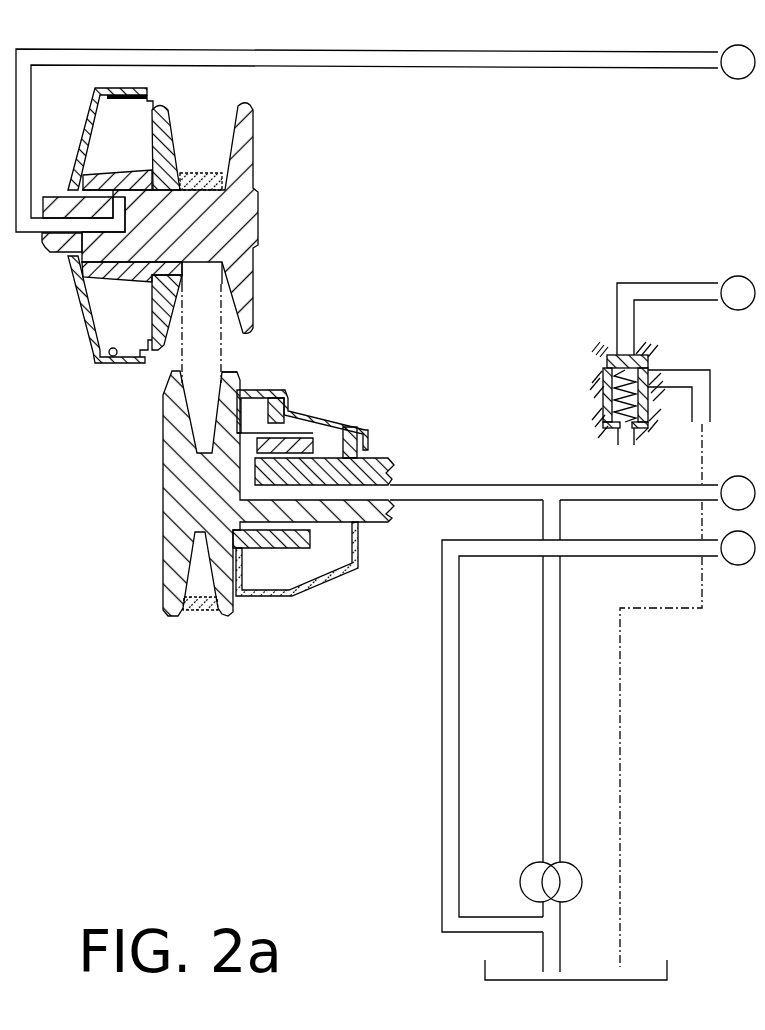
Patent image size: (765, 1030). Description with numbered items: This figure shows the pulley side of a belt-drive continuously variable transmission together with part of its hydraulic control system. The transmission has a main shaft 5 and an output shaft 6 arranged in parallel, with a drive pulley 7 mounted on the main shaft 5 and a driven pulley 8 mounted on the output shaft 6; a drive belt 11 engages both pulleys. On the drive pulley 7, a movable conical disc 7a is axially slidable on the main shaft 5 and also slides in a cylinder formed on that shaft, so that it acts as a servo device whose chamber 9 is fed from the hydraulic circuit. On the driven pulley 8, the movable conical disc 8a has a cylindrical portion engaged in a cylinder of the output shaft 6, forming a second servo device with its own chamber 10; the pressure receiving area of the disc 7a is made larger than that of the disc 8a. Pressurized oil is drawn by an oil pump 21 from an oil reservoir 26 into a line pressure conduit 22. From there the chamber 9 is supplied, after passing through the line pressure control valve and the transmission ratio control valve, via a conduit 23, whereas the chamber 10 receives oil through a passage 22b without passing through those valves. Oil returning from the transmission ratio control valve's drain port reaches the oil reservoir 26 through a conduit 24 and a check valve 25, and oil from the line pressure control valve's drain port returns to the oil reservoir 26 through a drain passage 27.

The main shaft 5 is at (62, 248).
The output shaft 6 is at (383, 462).
The drive pulley 7 is at (266, 128).
The movable conical disc 7a is at (168, 118).
The driven pulley 8 is at (147, 532).
The movable conical disc 8a is at (222, 422).
The chamber 9 is at (128, 152).
The chamber 10 is at (327, 542).
The drive belt 11 is at (201, 612).
The oil pump 21 is at (572, 872).
The line pressure conduit 22 is at (671, 484).
The passage 22b is at (522, 483).
The conduit 23 is at (554, 48).
The conduit 24 is at (673, 282).
The check valve 25 is at (603, 397).
The oil reservoir 26 is at (668, 970).
The drain passage 27 is at (590, 553).